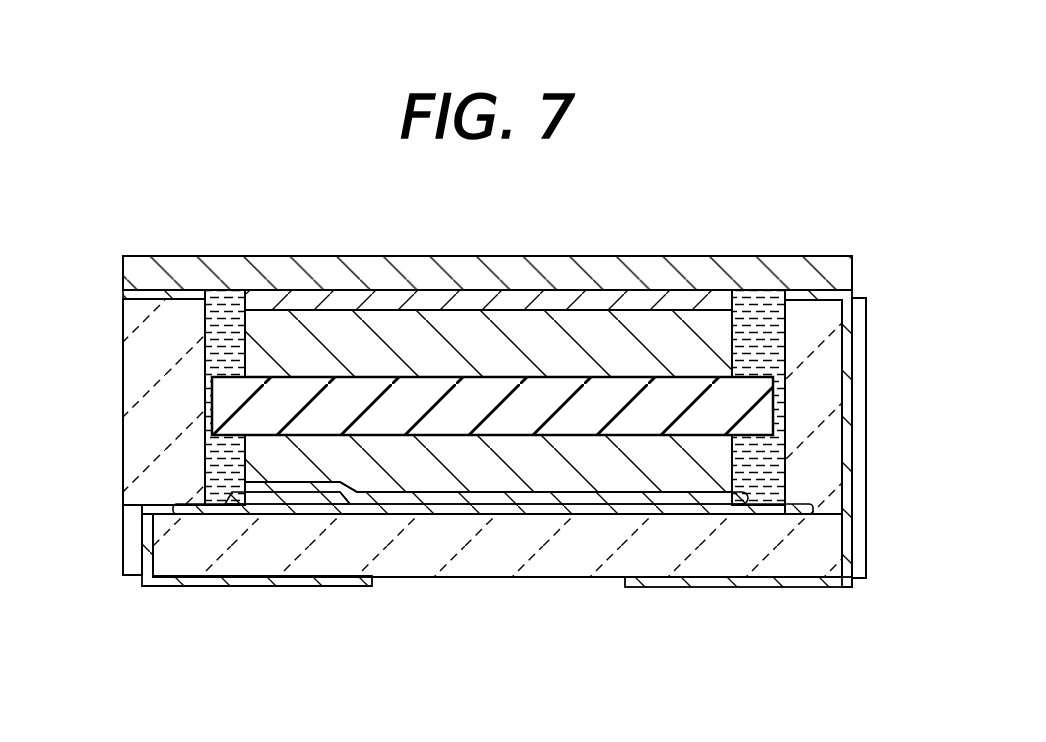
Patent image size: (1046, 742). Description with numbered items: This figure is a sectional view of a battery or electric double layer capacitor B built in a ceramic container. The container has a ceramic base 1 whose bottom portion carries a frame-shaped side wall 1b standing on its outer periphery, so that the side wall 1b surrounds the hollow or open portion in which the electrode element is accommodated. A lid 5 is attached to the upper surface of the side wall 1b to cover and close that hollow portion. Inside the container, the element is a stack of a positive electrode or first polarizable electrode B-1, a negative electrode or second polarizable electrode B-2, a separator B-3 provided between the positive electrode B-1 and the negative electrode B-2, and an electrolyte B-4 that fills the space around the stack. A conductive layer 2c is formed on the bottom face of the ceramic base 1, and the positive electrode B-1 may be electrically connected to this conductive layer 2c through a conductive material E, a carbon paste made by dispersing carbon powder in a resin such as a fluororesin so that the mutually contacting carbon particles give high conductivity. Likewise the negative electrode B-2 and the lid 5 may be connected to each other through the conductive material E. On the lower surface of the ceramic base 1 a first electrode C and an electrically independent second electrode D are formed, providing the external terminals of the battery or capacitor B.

The ceramic base 1 is at (770, 545).
The side wall 1b is at (170, 408).
The conductive layer 2c is at (475, 512).
The lid 5 is at (400, 256).
The battery or electric double layer capacitor B is at (122, 578).
The positive electrode B-1 is at (718, 467).
The negative electrode B-2 is at (580, 337).
The separator B-3 is at (738, 403).
The electrolyte B-4 is at (755, 340).
The first electrode C is at (247, 590).
The second electrode D is at (735, 590).
The conductive material E is at (552, 296).